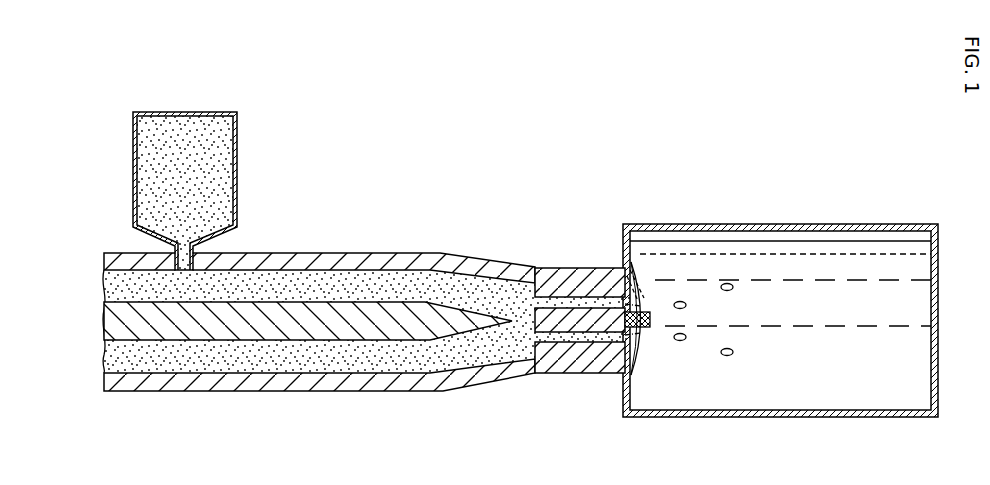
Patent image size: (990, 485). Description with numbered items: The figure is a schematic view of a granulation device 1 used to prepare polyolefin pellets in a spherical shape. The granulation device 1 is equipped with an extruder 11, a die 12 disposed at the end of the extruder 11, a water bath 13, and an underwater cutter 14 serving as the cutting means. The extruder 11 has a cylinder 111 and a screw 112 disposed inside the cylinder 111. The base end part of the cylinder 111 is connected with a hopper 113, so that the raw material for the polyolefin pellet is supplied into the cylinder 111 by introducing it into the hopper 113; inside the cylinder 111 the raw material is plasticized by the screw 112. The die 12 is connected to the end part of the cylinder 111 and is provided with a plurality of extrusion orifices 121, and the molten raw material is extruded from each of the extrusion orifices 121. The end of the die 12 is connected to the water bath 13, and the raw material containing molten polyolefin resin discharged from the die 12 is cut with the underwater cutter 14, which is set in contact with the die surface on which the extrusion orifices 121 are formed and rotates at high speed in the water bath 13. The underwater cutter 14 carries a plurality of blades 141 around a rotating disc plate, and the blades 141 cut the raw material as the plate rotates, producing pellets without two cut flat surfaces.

The granulation device 1 is at (466, 137).
The extruder 11 is at (403, 253).
The cylinder 111 is at (340, 253).
The screw 112 is at (347, 325).
The hopper 113 is at (237, 160).
The die 12 is at (580, 309).
The extrusion orifice 121 is at (571, 305).
The water bath 13 is at (845, 224).
The underwater cutter 14 is at (640, 312).
The blade 141 is at (636, 385).